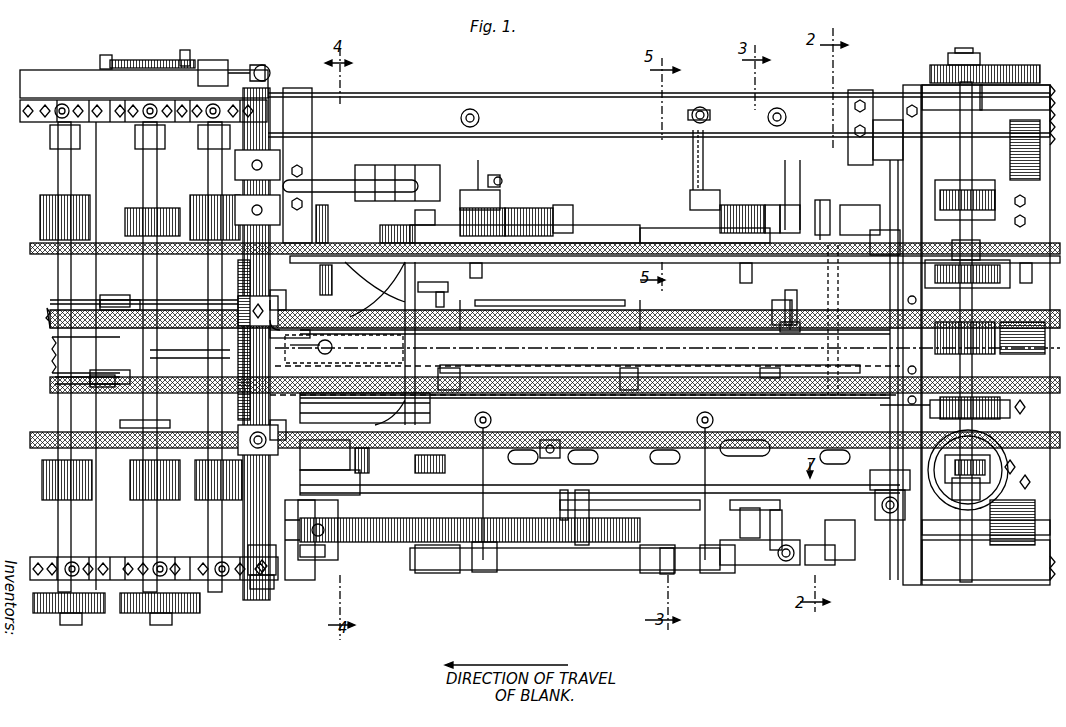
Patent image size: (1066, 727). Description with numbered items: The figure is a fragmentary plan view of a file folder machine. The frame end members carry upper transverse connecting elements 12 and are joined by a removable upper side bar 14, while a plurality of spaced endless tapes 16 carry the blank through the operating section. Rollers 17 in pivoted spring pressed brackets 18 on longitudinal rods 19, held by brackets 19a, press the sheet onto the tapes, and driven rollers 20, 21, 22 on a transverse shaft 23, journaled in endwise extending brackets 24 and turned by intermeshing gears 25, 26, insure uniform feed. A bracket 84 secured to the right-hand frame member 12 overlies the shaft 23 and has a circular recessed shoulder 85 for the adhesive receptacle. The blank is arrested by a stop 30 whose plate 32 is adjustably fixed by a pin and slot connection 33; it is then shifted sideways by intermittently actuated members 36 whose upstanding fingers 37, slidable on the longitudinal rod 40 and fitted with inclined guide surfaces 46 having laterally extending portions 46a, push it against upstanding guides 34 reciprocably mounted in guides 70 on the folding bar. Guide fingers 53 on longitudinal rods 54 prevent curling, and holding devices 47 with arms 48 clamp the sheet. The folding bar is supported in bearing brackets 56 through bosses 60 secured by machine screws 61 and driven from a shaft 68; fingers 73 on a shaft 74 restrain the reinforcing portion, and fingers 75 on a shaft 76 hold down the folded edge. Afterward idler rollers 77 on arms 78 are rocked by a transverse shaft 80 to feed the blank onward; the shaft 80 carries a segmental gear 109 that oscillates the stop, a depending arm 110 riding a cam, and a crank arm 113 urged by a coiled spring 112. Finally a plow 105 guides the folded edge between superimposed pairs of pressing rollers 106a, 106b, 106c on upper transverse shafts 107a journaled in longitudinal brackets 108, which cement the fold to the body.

The upper side bar 14 is at (587, 95).
The upper transverse connecting element 12 is at (308, 147).
The pressing rollers 106a is at (208, 487).
The pressing rollers 106b is at (145, 487).
The pressing rollers 106c is at (55, 487).
The longitudinal brackets 108 is at (115, 105).
The depending arm 110 is at (290, 100).
The coiled spring 112 is at (145, 58).
The crank arm 113 is at (220, 78).
The upstanding fingers 37 is at (470, 198).
The intermittently actuated members 36 is at (520, 202).
The inclined guide surface 46 is at (525, 208).
The laterally extending guide surfaces 46a is at (560, 218).
The rod 40 is at (640, 243).
The idler rollers 77 is at (385, 234).
The arms 78 is at (348, 262).
The plate 32 is at (395, 305).
The stop 30 is at (405, 342).
The pin and slot connection 33 is at (300, 305).
The transverse shaft 80 is at (258, 290).
The guide fingers 53 is at (436, 283).
The longitudinal rods 54 is at (470, 298).
The endless tapes 16 is at (590, 310).
The longitudinally extending shaft 76 is at (587, 366).
The fingers 75 is at (538, 395).
The holding devices 47 is at (495, 414).
The arms 48 is at (495, 462).
The longitudinal rods 19 is at (740, 305).
The brackets 19a is at (120, 300).
The upper transverse shafts 107a is at (157, 352).
The rollers 17 is at (782, 381).
The pivoted spring pressed brackets 18 is at (791, 328).
The endwise extending brackets 24 is at (920, 87).
The gear 26 is at (1025, 70).
The gear 25 is at (985, 65).
The transverse shaft 23 is at (972, 148).
The driven roller 20 is at (938, 190).
The driven roller 21 is at (935, 273).
The driven roller 22 is at (930, 412).
The bracket 84 is at (932, 497).
The circular recessed shoulder 85 is at (1030, 565).
The bosses 60 is at (370, 542).
The bearing brackets 56 is at (330, 562).
The upstanding guides 34 is at (450, 560).
The guides 70 is at (580, 560).
The fingers 73 is at (560, 550).
The shaft 68 is at (660, 555).
The machine screws 61 is at (800, 562).
The shaft 74 is at (750, 560).
The segmental gear 109 is at (264, 578).
The plow 105 is at (303, 528).